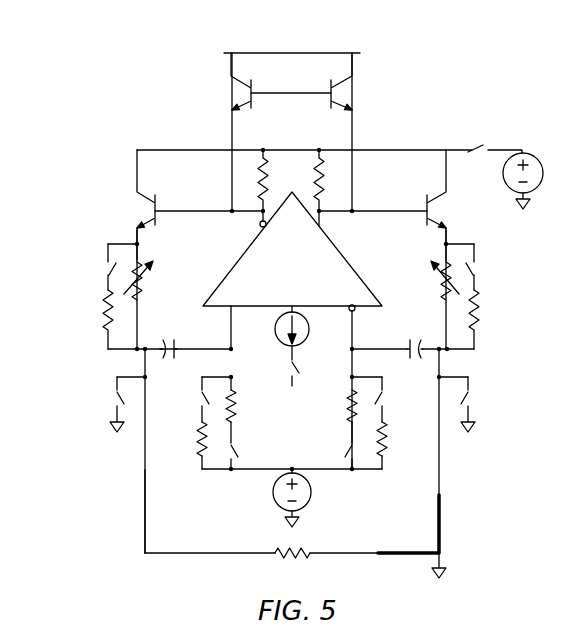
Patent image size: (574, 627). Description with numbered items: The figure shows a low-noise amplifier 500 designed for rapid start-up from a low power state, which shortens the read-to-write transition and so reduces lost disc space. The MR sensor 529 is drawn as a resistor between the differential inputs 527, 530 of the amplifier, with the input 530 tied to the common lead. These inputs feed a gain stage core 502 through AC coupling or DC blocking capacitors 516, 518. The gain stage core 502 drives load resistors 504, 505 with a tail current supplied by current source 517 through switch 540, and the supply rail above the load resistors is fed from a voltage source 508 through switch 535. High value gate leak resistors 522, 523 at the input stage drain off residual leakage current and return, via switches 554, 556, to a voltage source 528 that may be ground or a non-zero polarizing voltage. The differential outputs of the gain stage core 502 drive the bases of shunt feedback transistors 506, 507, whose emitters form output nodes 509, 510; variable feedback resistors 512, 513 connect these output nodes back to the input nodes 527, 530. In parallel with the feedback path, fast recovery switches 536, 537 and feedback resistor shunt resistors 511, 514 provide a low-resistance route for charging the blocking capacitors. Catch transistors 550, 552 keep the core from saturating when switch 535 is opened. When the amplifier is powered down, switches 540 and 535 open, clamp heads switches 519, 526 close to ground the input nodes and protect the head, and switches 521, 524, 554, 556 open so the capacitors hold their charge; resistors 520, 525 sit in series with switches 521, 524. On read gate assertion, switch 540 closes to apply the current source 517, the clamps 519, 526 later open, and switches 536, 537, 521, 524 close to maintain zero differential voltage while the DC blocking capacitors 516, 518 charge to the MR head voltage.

The low-noise amplifier 500 is at (100, 45).
The gain stage core 502 is at (278, 299).
The load resistor 504 is at (280, 180).
The load resistor 505 is at (302, 180).
The shunt feedback transistor 506 is at (158, 199).
The shunt feedback transistor 507 is at (425, 200).
The voltage source 508 is at (505, 186).
The output node 509 is at (140, 240).
The output node 510 is at (443, 243).
The feedback resistor shunt resistor 511 is at (104, 312).
The variable feedback resistor 512 is at (145, 292).
The variable feedback resistor 513 is at (440, 292).
The feedback resistor shunt resistor 514 is at (478, 312).
The DC blocking capacitor 516 is at (178, 345).
The current source 517 is at (308, 342).
The DC blocking capacitor 518 is at (406, 345).
The clamp heads switch 519 is at (114, 390).
The resistor 520 is at (203, 447).
The switch 521 is at (204, 395).
The gate leak resistor 522 is at (234, 421).
The gate leak resistor 523 is at (350, 421).
The switch 524 is at (380, 394).
The resistor 525 is at (381, 447).
The clamp heads switch 526 is at (471, 390).
The differential input 527 is at (145, 518).
The voltage source 528 is at (276, 500).
The MR sensor 529 is at (303, 552).
The differential input 530 is at (441, 527).
The switch 535 is at (478, 148).
The fast recovery switch 536 is at (108, 270).
The fast recovery switch 537 is at (476, 270).
The switch 540 is at (291, 369).
The catch transistor 550 is at (281, 92).
The catch transistor 552 is at (328, 92).
The switch 554 is at (234, 452).
The switch 556 is at (350, 452).